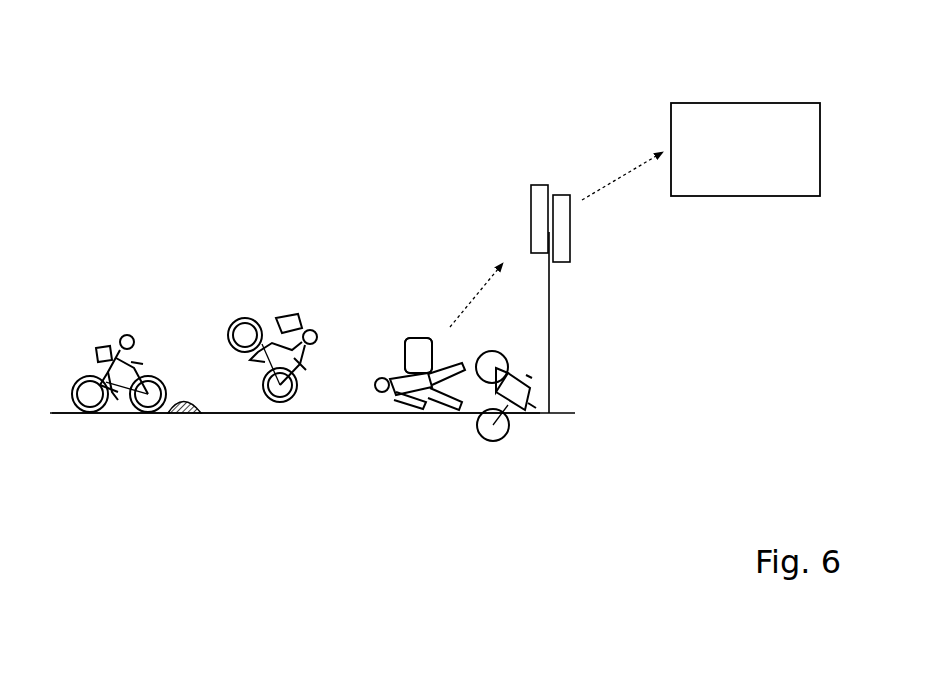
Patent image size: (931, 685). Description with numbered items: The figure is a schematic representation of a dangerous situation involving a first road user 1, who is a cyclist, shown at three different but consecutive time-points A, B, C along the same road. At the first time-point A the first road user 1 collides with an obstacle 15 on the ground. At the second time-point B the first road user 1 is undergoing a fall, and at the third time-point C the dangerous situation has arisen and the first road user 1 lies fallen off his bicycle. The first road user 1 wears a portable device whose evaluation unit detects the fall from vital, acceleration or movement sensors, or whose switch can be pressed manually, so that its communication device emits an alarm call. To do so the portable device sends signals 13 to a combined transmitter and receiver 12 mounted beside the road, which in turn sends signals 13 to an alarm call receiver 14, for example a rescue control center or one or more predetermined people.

The first road user 1 is at (122, 334).
The combined transmitter and receiver 12 is at (550, 340).
The signals 13 is at (477, 293).
The alarm call receiver 14 is at (745, 103).
The obstacle 15 is at (206, 413).
The first time-point A is at (112, 423).
The second time-point B is at (275, 423).
The third time-point C is at (407, 330).